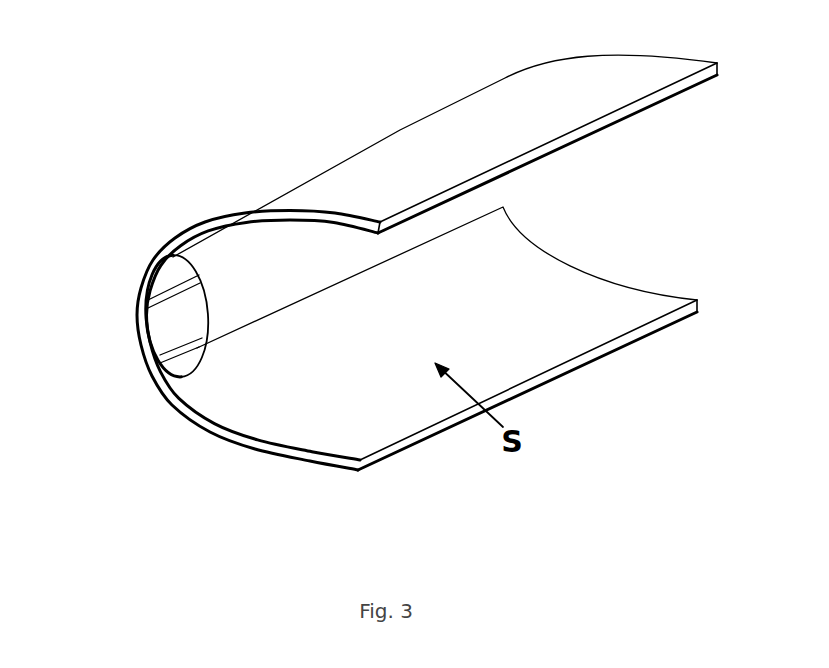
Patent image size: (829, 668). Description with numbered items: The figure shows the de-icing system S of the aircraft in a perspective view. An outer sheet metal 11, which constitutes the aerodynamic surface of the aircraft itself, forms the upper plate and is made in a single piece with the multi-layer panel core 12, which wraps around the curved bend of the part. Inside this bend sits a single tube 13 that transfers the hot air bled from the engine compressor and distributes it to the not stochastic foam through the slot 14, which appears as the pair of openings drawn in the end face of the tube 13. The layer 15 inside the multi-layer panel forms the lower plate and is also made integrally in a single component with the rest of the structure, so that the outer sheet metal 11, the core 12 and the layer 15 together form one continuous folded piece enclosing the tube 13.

The outer sheet metal 11 is at (575, 100).
The multi-layer panel core 12 is at (248, 222).
The tube 13 is at (222, 263).
The slot 14 is at (148, 300).
The layer inside the multi-layer panel 15 is at (285, 418).